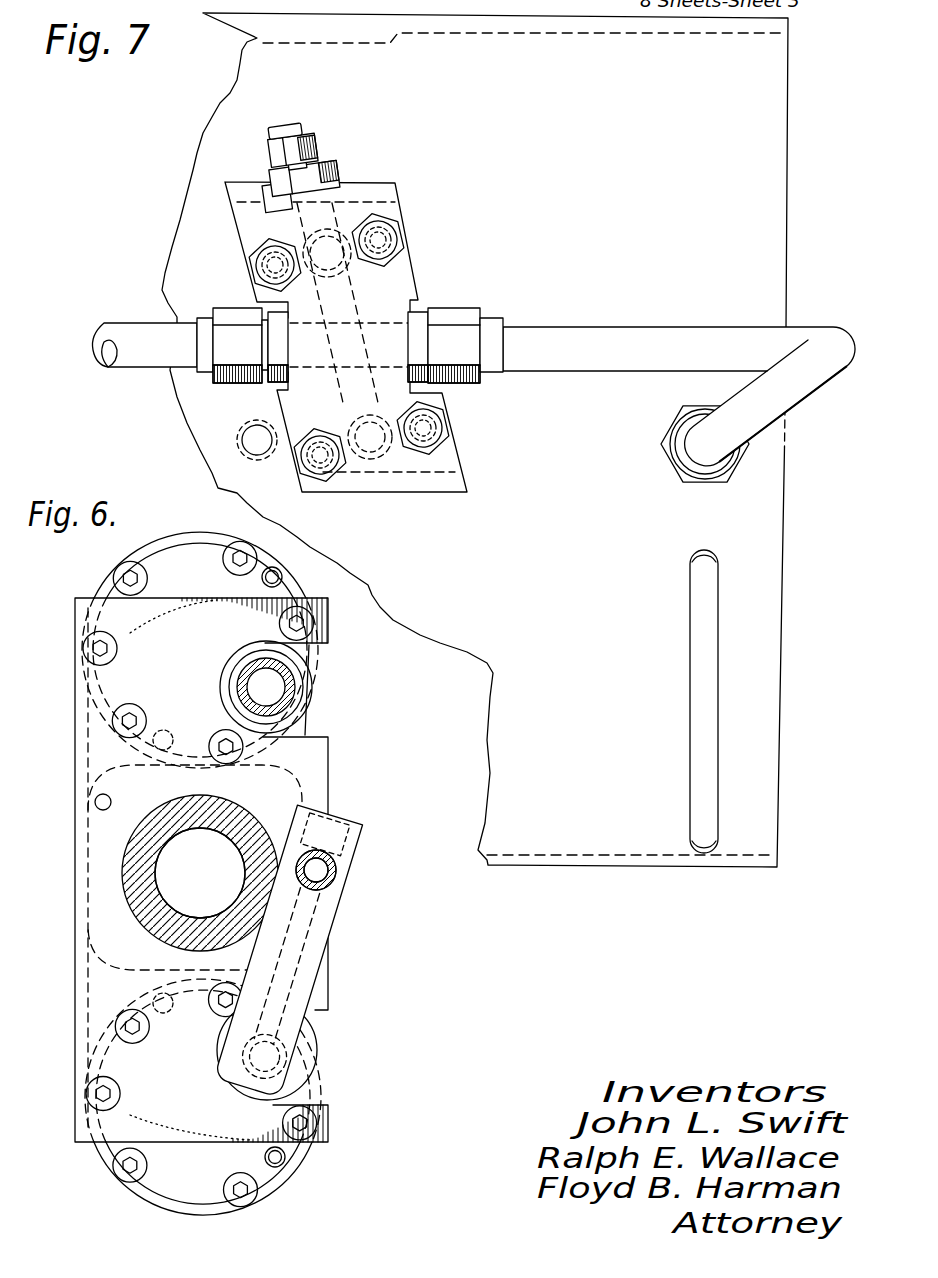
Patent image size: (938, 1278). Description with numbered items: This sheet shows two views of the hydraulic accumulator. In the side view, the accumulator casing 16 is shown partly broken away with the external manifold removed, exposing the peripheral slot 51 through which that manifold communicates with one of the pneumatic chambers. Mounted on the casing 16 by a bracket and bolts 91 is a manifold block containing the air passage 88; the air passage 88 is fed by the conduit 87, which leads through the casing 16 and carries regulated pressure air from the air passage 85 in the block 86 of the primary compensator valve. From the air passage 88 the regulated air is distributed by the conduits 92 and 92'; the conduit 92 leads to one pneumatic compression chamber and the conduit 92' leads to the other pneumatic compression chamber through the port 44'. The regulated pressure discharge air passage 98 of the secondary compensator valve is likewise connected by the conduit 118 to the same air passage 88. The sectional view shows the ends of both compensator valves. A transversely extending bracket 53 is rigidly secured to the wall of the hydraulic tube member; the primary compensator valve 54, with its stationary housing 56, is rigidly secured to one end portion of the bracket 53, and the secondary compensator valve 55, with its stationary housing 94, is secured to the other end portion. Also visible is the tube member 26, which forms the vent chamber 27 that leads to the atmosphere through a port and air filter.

In FIG. 7, the casing 16 is at (763, 122).
In FIG. 7, the peripheral slot 51 is at (693, 682).
In FIG. 7, the port 44' is at (678, 445).
In FIG. 7, the conduit 92' is at (679, 370).
In FIG. 7, the regulated pressure discharge air passage 98 is at (420, 265).
In FIG. 7, the air passage 88 is at (347, 305).
In FIG. 7, the conduit 87 is at (365, 467).
In FIG. 6, the conduit 87 is at (336, 870).
In FIG. 7, the bolts 91 is at (392, 220).
In FIG. 7, the conduit 92 is at (297, 327).
In FIG. 6, the secondary compensator valve 55 is at (94, 578).
In FIG. 6, the primary compensator valve 54 is at (306, 1172).
In FIG. 6, the transverse extending bracket 53 is at (322, 752).
In FIG. 6, the stationary housing 94 is at (345, 658).
In FIG. 6, the conduit 118 is at (294, 690).
In FIG. 6, the tube member 26 is at (264, 792).
In FIG. 6, the vent chamber 27 is at (218, 887).
In FIG. 6, the stationary housing 56 is at (318, 1077).
In FIG. 6, the block 86 is at (340, 895).
In FIG. 6, the air passage 85 is at (300, 968).